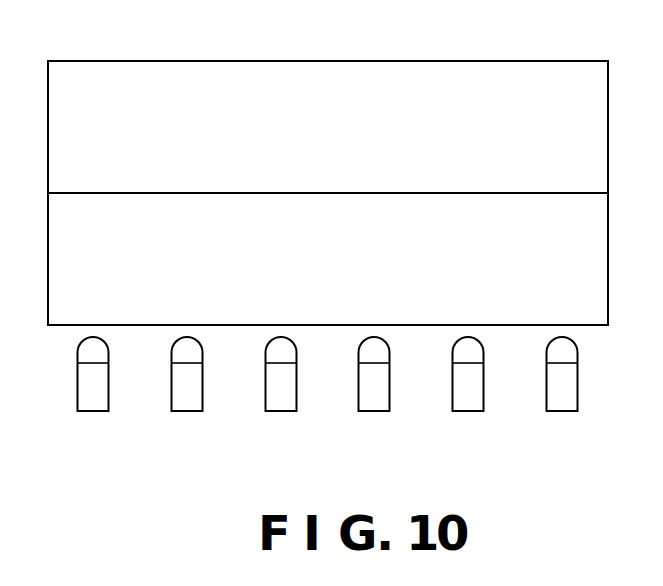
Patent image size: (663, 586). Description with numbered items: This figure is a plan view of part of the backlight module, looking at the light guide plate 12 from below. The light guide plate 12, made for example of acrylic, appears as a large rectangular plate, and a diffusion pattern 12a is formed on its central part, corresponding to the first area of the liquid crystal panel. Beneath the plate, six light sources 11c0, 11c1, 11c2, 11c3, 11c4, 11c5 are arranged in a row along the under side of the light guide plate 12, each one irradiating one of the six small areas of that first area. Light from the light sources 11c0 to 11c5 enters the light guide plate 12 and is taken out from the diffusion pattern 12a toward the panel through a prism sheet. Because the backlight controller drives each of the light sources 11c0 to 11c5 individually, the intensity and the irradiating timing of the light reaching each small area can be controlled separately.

The light guide plate 12 is at (549, 62).
The diffusion pattern 12a is at (176, 88).
The light source 11c0 is at (93, 390).
The light source 11c1 is at (187, 390).
The light source 11c2 is at (281, 390).
The light source 11c3 is at (374, 390).
The light source 11c4 is at (468, 390).
The light source 11c5 is at (562, 390).